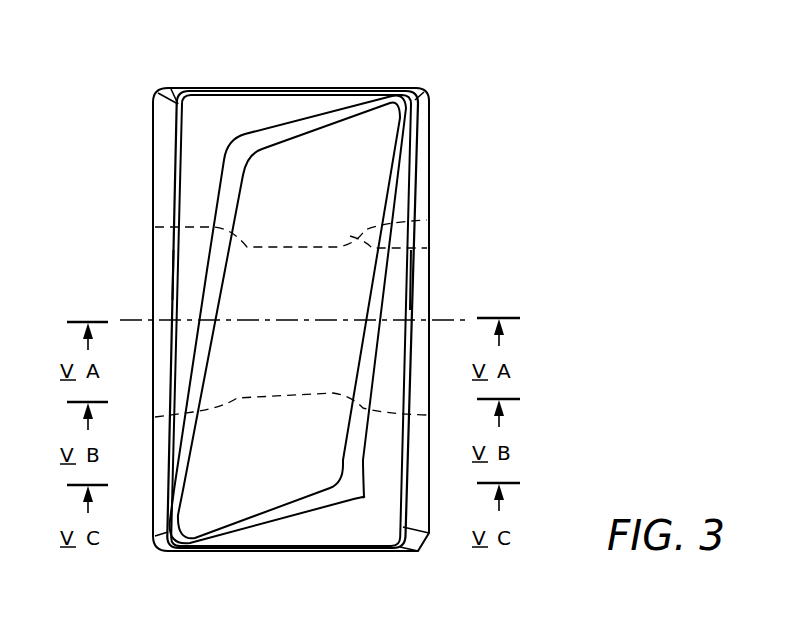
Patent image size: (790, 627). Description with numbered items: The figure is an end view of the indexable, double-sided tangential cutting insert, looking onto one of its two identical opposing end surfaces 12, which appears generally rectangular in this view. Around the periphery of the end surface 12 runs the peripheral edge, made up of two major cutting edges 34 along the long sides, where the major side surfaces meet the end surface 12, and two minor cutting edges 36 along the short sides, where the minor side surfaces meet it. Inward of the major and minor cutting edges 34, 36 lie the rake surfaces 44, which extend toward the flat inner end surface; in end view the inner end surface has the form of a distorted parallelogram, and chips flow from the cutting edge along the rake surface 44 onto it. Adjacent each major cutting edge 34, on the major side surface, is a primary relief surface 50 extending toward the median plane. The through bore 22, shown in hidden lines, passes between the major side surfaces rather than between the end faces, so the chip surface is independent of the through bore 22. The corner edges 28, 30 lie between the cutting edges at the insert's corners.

The end surface 12 is at (250, 192).
The through bore 22 is at (427, 248).
The chamfered corner 28 is at (172, 88).
The rounded corner 30 is at (420, 88).
The major cutting edge 34 is at (170, 274).
The minor cutting edge 36 is at (338, 86).
The rake surface 44 is at (240, 115).
The primary relief surface 50 is at (165, 167).